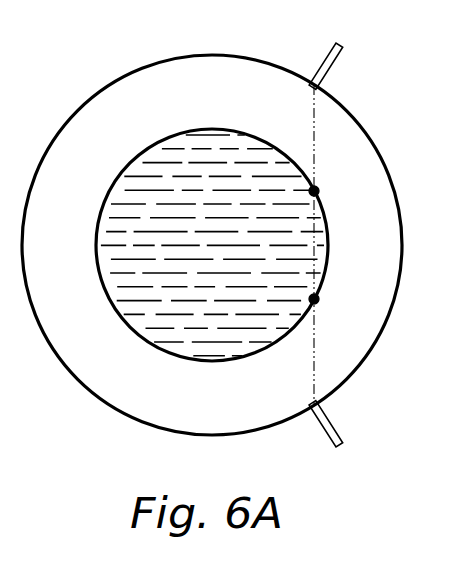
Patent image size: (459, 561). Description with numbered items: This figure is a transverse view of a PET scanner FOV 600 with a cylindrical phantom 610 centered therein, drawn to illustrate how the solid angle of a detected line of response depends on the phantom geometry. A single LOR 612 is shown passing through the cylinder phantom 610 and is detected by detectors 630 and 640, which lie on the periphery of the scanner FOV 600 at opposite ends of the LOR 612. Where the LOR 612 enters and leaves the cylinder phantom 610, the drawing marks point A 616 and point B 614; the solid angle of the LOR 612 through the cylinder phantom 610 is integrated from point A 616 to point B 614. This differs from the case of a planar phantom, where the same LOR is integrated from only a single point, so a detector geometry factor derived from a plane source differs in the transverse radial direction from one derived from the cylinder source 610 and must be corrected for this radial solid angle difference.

The scanner FOV 600 is at (117, 79).
The cylindrical phantom 610 is at (152, 345).
The LOR 612 is at (314, 145).
The point B 614 is at (318, 196).
The point A 616 is at (320, 297).
The detector 630 is at (338, 66).
The detector 640 is at (320, 432).